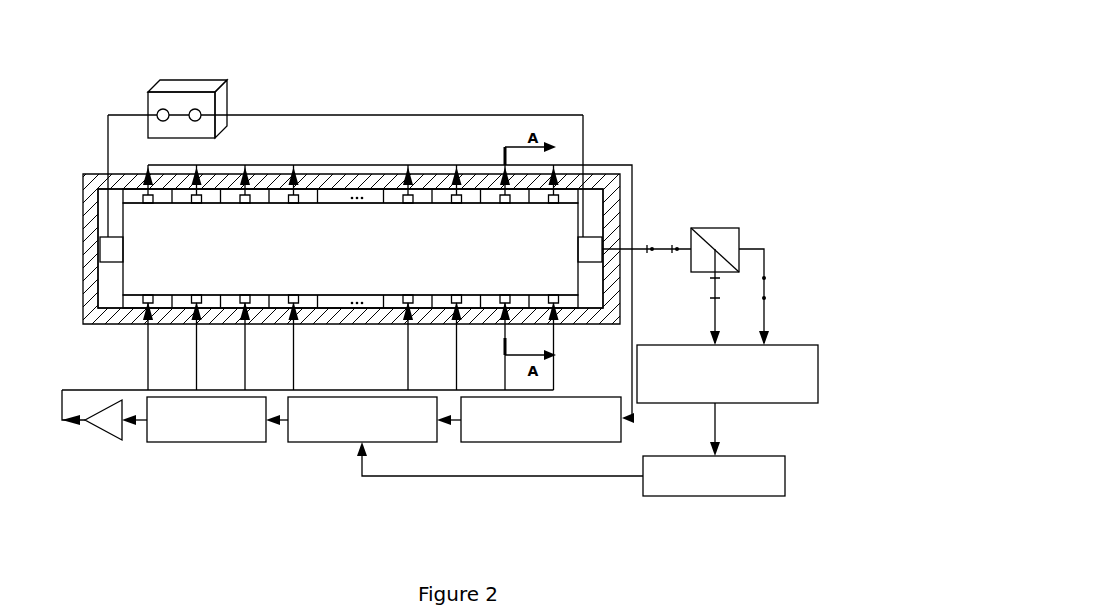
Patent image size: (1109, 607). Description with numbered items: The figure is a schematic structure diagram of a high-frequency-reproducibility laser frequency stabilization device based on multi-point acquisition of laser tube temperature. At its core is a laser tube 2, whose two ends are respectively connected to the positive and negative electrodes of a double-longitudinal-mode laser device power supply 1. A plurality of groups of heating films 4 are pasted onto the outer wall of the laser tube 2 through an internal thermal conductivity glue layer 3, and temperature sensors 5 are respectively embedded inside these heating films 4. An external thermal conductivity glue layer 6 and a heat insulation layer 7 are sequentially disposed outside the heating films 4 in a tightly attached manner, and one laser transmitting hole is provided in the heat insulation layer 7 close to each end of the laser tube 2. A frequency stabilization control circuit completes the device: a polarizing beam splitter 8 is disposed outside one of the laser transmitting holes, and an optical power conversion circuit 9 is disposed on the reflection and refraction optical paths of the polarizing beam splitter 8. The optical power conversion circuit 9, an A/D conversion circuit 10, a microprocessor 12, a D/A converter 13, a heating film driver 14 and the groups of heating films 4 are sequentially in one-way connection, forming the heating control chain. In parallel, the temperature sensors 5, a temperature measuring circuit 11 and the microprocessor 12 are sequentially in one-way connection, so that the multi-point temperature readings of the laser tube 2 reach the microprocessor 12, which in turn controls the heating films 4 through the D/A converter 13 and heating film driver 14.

The double-longitudinal-mode laser device power supply 1 is at (152, 102).
The laser tube 2 is at (230, 228).
The internal thermal conductivity glue layer 3 is at (283, 203).
The plurality of groups of heating films 4 is at (308, 197).
The temperature sensor 5 is at (405, 200).
The external thermal conductivity glue layer 6 is at (445, 190).
The heat insulation layer 7 is at (482, 182).
The polarizing beam splitter 8 is at (717, 238).
The optical power conversion circuit 9 is at (755, 382).
The A/D conversion circuit 10 is at (757, 473).
The temperature measuring circuit 11 is at (552, 430).
The microprocessor 12 is at (422, 424).
The D/A converter 13 is at (217, 432).
The heating film driver 14 is at (122, 427).